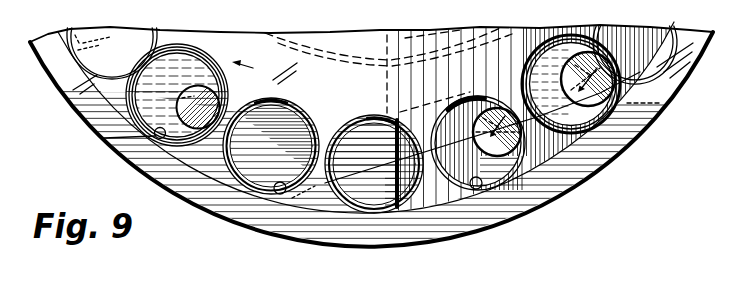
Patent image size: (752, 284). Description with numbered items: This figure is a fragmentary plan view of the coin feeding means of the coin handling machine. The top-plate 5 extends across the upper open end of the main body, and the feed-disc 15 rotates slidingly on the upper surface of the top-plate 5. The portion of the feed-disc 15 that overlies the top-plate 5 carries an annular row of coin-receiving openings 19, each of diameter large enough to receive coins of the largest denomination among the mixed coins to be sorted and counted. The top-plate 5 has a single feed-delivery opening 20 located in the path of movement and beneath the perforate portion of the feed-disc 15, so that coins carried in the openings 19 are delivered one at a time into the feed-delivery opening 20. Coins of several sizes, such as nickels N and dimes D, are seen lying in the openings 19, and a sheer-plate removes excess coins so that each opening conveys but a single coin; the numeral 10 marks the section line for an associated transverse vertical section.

The top-plate 5 is at (104, 138).
The roller tubes 10 is at (314, 181).
The feed-disc 15 is at (203, 152).
The coin-receiving openings 19 is at (155, 137).
The feed-delivery opening 20 is at (452, 162).
The dimes D is at (194, 89).
The nickels N is at (606, 88).